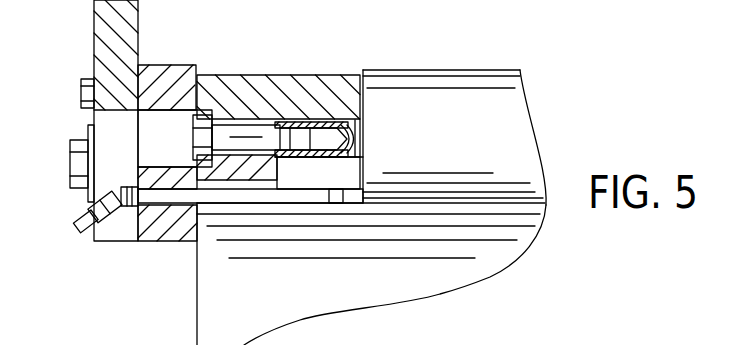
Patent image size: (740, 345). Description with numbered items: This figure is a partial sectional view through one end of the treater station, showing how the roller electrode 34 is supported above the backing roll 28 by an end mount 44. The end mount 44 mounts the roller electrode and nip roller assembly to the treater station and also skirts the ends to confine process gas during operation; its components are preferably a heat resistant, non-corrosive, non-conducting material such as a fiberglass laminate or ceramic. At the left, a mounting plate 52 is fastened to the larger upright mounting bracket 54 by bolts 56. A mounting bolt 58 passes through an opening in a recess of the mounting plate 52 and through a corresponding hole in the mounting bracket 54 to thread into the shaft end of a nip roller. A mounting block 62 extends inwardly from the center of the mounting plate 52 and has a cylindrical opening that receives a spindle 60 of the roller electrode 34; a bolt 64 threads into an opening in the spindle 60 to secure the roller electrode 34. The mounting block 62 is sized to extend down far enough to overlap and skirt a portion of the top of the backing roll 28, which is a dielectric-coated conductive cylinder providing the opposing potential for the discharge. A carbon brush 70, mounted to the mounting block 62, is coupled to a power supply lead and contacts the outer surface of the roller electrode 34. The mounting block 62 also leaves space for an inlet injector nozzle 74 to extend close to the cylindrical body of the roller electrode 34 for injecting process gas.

The backing roll 28 is at (467, 279).
The roller electrode 34 is at (512, 112).
The end mount 44 is at (112, 246).
The mounting plate 52 is at (170, 70).
The mounting bracket 54 is at (102, 23).
The bolt 56 is at (80, 90).
The mounting bolt 58 is at (72, 169).
The spindle 60 is at (358, 133).
The mounting block 62 is at (268, 83).
The bolt 64 is at (200, 134).
The carbon brush 70 is at (128, 190).
The inlet injector nozzle 74 is at (313, 193).